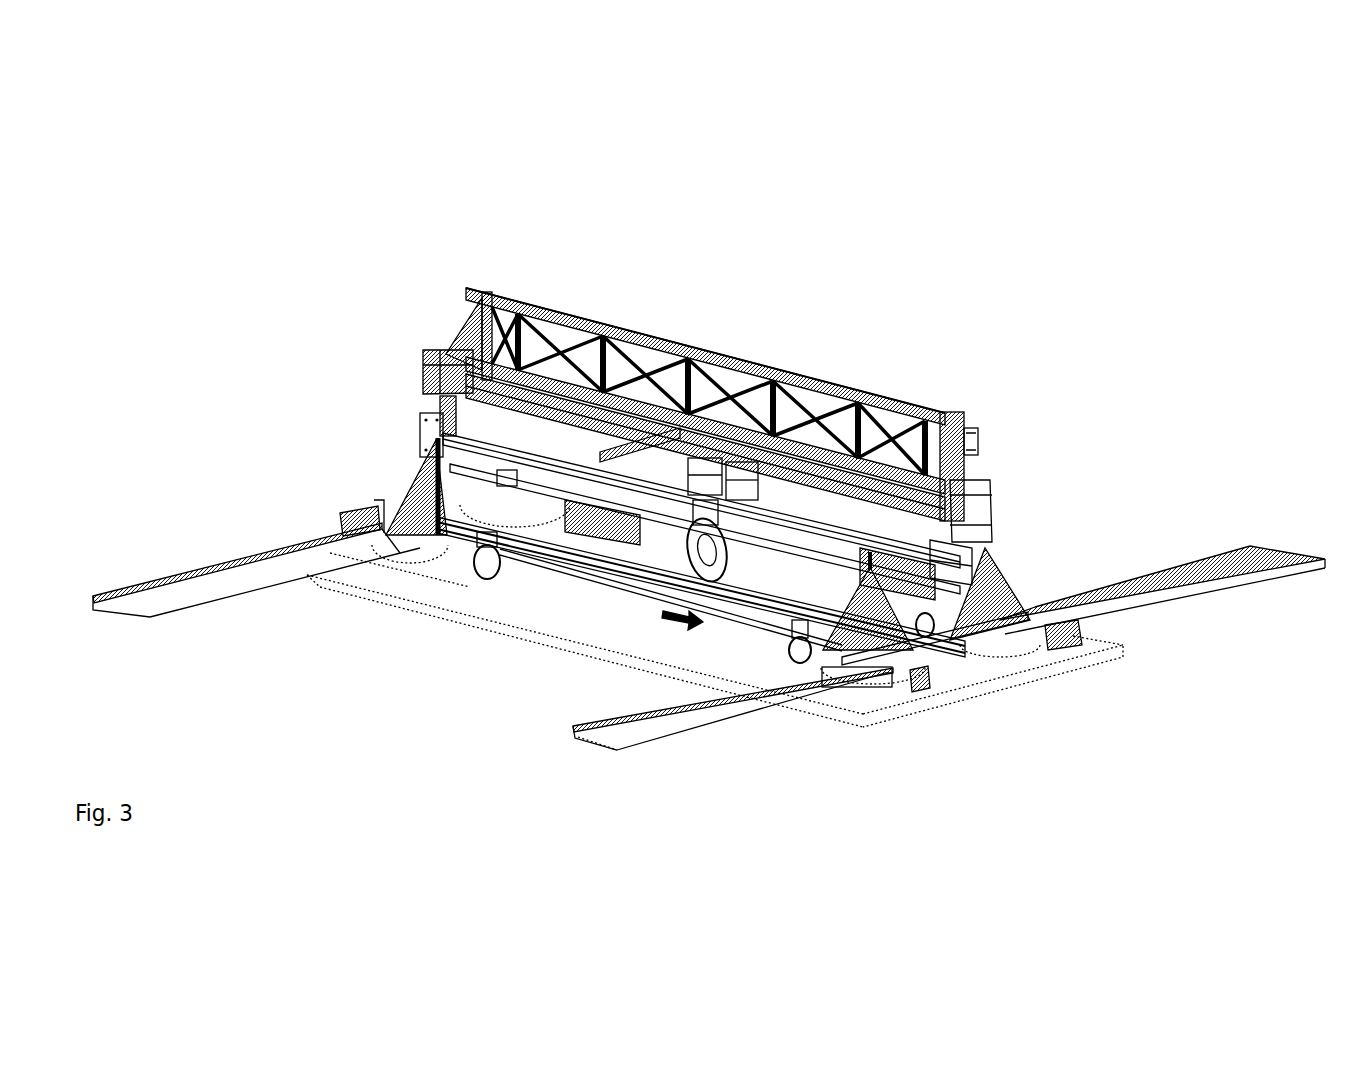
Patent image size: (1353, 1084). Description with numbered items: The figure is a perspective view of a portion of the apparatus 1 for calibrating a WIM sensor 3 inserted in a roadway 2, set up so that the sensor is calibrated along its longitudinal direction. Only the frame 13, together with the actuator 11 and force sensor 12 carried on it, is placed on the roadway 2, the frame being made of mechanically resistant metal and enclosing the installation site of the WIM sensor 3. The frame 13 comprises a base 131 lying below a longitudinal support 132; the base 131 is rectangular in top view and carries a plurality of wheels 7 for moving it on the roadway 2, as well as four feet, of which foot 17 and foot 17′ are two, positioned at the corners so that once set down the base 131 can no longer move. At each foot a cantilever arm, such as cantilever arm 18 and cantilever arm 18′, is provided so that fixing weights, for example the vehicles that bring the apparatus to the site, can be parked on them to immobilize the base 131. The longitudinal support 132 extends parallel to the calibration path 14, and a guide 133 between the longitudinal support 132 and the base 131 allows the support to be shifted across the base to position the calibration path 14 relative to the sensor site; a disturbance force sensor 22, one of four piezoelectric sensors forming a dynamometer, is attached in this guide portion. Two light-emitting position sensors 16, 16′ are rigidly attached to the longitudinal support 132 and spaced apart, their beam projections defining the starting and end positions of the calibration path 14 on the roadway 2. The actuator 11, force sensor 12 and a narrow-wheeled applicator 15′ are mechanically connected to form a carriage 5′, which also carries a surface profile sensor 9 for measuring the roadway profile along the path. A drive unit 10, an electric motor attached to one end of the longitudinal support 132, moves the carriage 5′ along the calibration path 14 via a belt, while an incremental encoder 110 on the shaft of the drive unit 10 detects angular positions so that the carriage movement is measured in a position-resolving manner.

The apparatus 1 is at (898, 262).
The roadway 2 is at (452, 612).
The WIM sensor 3 is at (775, 592).
The carriage 5′ is at (423, 707).
The wheels 7 is at (480, 585).
The surface profile sensor 9 is at (690, 468).
The drive unit 10 is at (963, 427).
The actuator 11 is at (610, 585).
The force sensor 12 is at (616, 612).
The frame 13 is at (1138, 344).
The calibration path 14 is at (705, 637).
The applicator 15′ is at (712, 508).
The position sensor 16 is at (857, 487).
The position sensor 16′ is at (486, 292).
The foot 17 is at (915, 678).
The foot 17′ is at (1053, 657).
The cantilever arm 18 is at (615, 748).
The cantilever arm 18′ is at (1185, 533).
The disturbance force sensor 22 is at (913, 543).
The incremental encoder 110 is at (1012, 420).
The base 131 is at (985, 525).
The longitudinal support 132 is at (887, 396).
The guide 133 is at (965, 482).